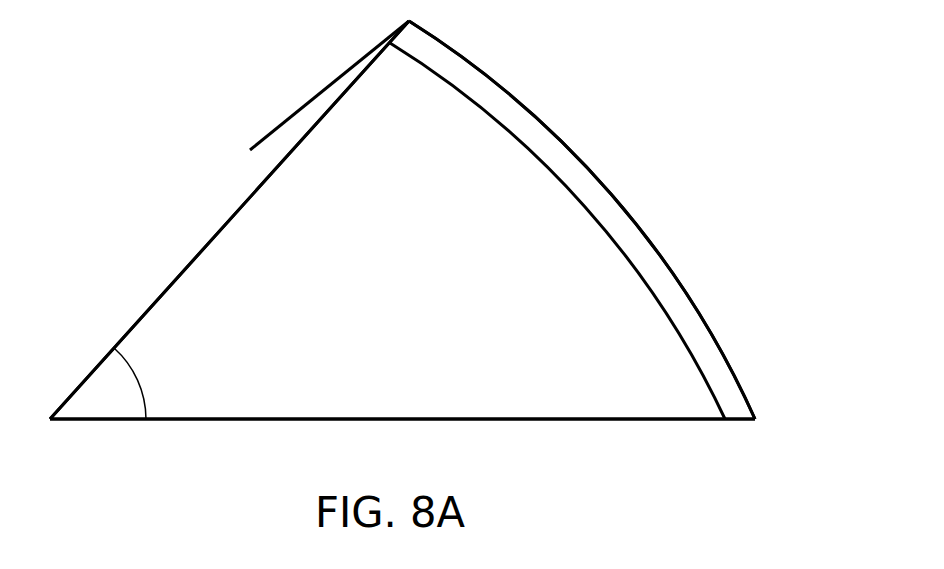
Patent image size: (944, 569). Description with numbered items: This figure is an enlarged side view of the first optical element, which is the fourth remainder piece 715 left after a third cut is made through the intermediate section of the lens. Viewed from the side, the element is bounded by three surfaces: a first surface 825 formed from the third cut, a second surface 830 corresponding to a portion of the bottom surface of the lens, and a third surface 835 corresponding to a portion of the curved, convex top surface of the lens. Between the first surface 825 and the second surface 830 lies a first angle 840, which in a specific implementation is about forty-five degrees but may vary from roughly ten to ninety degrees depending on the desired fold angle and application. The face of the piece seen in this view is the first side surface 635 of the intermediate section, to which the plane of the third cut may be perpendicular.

The fourth remainder piece 715 is at (362, 294).
The first surface 825 is at (136, 317).
The second surface 830 is at (356, 421).
The third surface 835 is at (524, 92).
The first angle 840 is at (148, 395).
The first side surface 635 is at (362, 168).